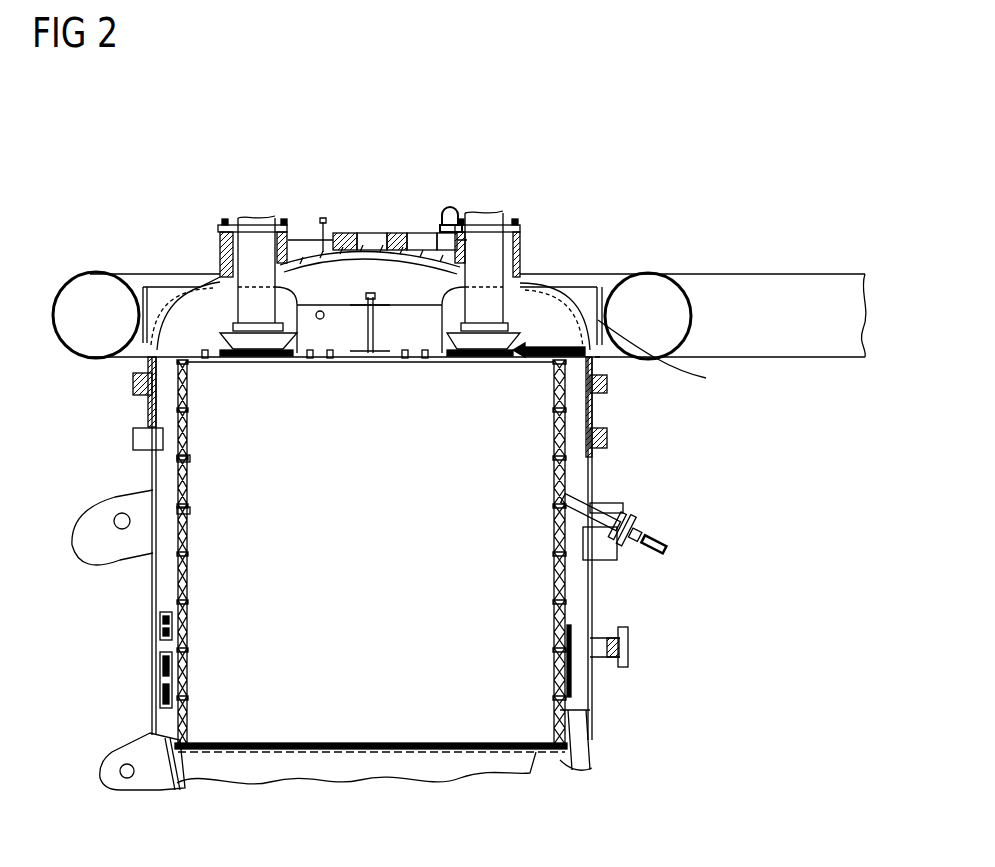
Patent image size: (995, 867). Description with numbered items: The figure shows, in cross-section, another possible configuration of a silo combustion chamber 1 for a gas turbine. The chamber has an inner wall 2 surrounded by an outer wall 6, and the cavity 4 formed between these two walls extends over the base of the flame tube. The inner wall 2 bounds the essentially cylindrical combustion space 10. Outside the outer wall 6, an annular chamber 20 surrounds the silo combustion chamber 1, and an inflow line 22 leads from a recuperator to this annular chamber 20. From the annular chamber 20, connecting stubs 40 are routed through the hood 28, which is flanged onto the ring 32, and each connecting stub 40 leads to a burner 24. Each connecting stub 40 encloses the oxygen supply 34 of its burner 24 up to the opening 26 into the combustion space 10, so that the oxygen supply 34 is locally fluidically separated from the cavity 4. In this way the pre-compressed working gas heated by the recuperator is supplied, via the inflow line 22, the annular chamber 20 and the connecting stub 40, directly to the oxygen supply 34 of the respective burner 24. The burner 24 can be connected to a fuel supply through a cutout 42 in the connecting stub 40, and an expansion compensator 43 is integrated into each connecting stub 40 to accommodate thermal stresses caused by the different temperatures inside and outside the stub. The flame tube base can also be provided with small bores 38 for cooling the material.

The silo combustion chamber 1 is at (326, 126).
The inner wall 2 is at (172, 582).
The cavity 4 is at (160, 695).
The outer wall 6 is at (152, 622).
The combustion space 10 is at (505, 487).
The annular chamber 20 is at (80, 298).
The inflow line 22 is at (783, 290).
The burner 24 is at (245, 248).
The opening 26 is at (488, 358).
The hood 28 is at (625, 355).
The ring 32 is at (605, 398).
The oxygen supply 34 is at (284, 318).
The small bores 38 is at (205, 358).
The connecting stub 40 is at (183, 290).
The cutout 42 is at (258, 285).
The expansion compensator 43 is at (143, 290).